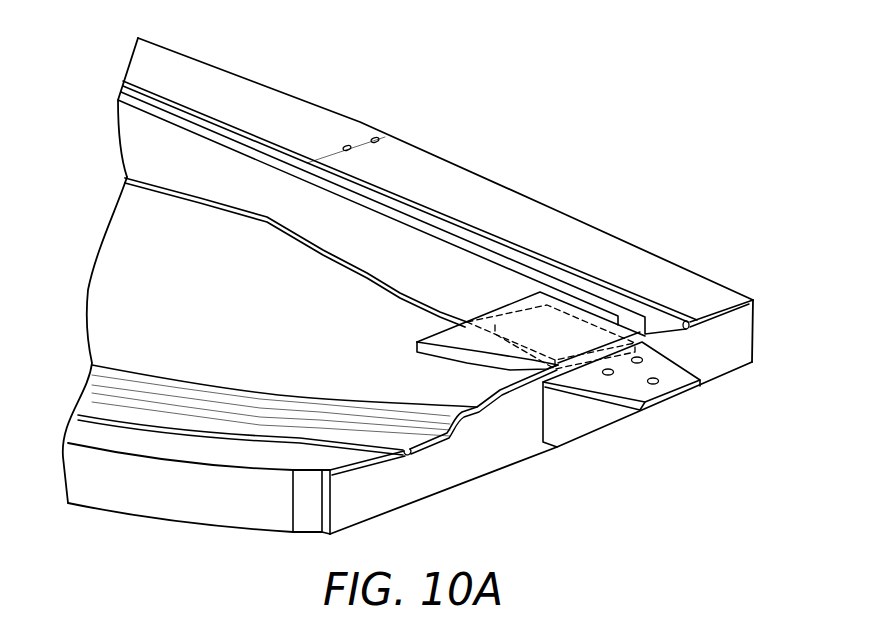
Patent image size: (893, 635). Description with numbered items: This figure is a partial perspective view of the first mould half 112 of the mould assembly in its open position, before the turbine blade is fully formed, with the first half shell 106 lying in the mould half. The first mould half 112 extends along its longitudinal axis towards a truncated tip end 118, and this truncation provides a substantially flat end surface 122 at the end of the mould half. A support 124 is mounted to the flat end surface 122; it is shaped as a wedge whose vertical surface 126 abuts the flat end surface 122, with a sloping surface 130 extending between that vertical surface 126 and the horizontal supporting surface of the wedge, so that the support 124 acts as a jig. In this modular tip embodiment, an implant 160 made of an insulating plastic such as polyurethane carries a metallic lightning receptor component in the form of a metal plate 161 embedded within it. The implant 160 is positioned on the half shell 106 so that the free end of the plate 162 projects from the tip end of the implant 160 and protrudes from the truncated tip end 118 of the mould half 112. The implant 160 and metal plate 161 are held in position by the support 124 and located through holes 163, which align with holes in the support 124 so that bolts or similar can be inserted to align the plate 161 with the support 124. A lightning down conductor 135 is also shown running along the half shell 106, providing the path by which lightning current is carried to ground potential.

The first half shell 106 is at (207, 264).
The first mould half 112 is at (286, 78).
The truncated tip end 118 is at (452, 288).
The flat end surface 122 is at (390, 498).
The support 124 is at (558, 433).
The vertical surface 126 is at (538, 435).
The sloping surface 130 is at (580, 437).
The lightning down conductor 135 is at (322, 252).
The implant 160 is at (527, 303).
The metal plate 161 is at (575, 333).
The free end of the plate 162 is at (680, 383).
The holes 163 is at (655, 385).